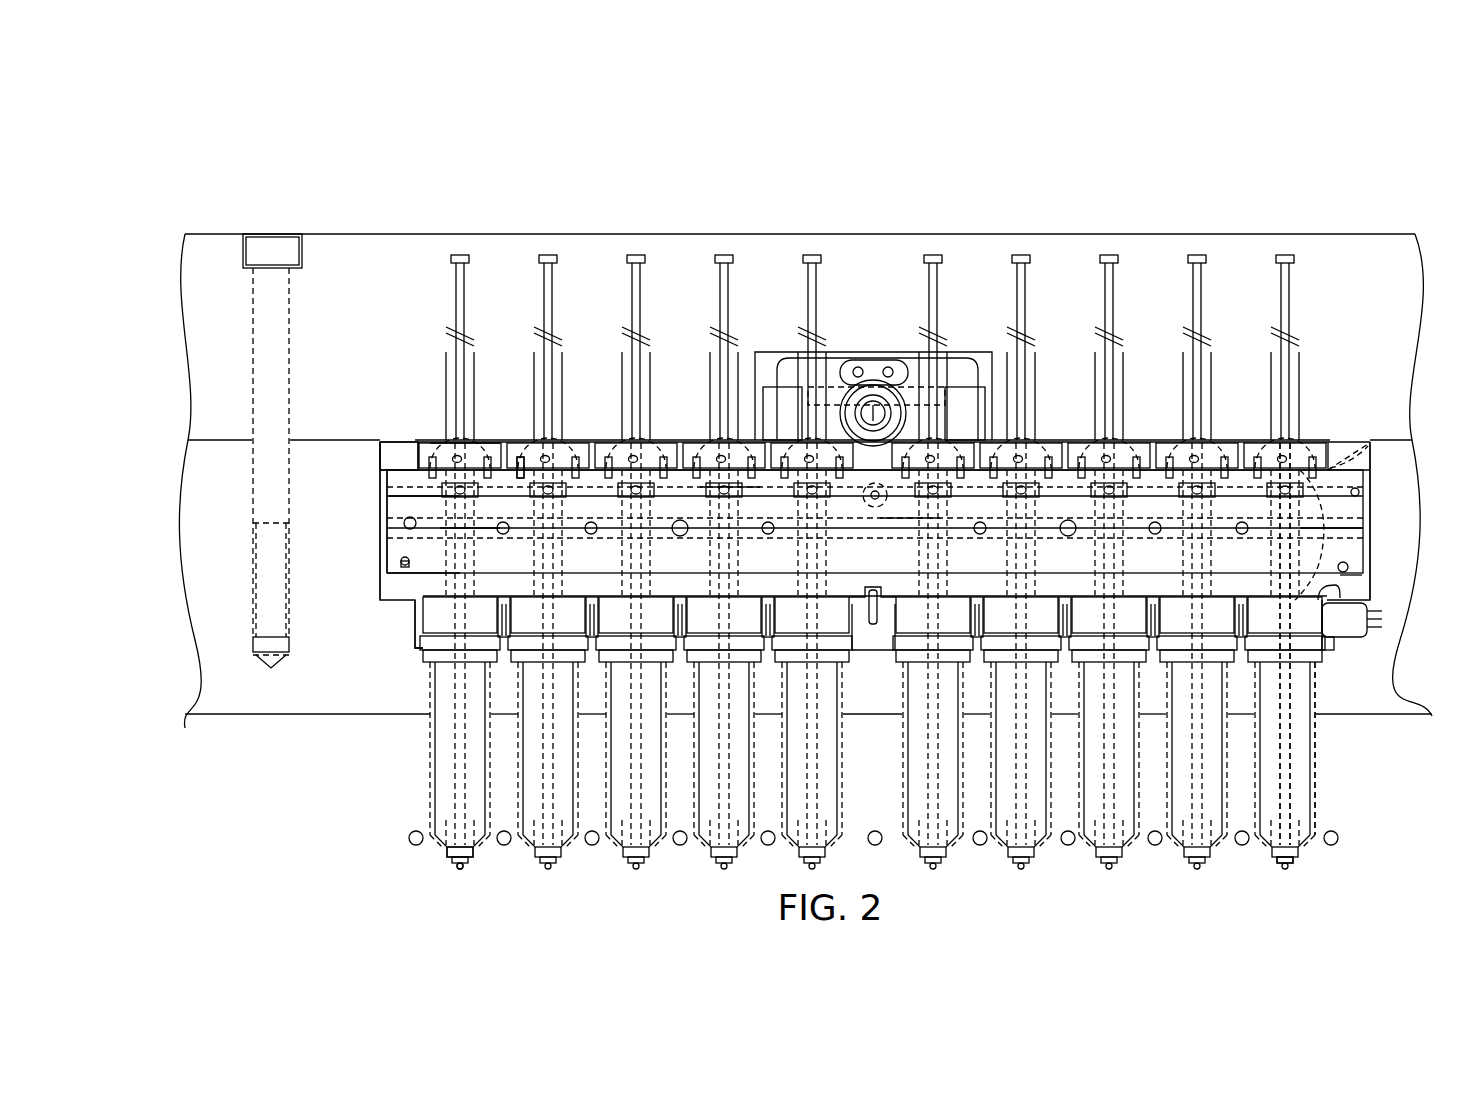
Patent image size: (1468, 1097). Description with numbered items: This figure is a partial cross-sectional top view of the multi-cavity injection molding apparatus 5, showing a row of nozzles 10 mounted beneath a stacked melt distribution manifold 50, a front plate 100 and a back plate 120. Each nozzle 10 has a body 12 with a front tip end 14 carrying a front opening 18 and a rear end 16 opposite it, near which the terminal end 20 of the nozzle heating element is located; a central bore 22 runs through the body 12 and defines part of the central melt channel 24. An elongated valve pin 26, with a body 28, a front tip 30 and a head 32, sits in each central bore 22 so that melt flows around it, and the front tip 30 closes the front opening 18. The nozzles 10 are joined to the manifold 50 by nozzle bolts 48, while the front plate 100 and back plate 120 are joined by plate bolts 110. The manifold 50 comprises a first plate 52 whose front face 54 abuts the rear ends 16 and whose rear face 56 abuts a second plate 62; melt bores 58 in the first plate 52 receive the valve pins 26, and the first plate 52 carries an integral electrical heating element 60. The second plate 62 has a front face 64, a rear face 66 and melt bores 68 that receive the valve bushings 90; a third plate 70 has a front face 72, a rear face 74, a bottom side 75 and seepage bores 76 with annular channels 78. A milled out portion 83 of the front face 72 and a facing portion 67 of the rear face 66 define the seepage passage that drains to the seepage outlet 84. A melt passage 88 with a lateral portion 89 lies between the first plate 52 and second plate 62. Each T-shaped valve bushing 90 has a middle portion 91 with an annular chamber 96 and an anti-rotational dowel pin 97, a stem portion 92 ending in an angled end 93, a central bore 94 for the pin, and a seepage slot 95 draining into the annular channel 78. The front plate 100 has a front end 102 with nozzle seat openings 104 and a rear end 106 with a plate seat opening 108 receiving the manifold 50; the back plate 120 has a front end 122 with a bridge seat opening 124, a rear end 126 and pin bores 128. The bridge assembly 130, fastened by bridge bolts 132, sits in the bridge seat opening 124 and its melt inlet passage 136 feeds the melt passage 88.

The injection molding apparatus 5 is at (1135, 877).
The nozzle 10 is at (446, 753).
The body 12 is at (442, 770).
The front tip end 14 is at (472, 850).
The front opening 18 is at (455, 856).
The rear end 16 is at (440, 615).
The terminal end 20 is at (1358, 622).
The central bore 22 is at (1300, 678).
The central melt channel 24 is at (1293, 779).
The valve pin 26 is at (462, 305).
The body 28 is at (1335, 590).
The front tip 30 is at (1288, 865).
The head 32 is at (1290, 255).
The nozzle bolt 48 is at (408, 467).
The melt distribution manifold 50 is at (1362, 517).
The first plate 52 is at (1385, 618).
The front face 54 is at (1330, 645).
The rear face 56 is at (1348, 568).
The melt bore 58 is at (1310, 530).
The integral electrical heating element 60 is at (1352, 578).
The second plate 62 is at (395, 513).
The front face 64 is at (408, 527).
The rear face 66 is at (407, 495).
The portion 67 is at (480, 528).
The melt bore 68 is at (398, 456).
The third plate 70 is at (1395, 468).
The front face 72 is at (1358, 492).
The rear face 74 is at (1355, 470).
The bottom side 75 is at (1375, 465).
The seepage bore 76 is at (575, 450).
The annular channel 78 is at (650, 493).
The milled out portion 83 is at (990, 495).
The seepage outlet 84 is at (890, 440).
The melt passage 88 is at (1255, 447).
The lateral portion 89 is at (1130, 527).
The valve bushing 90 is at (445, 445).
The middle portion 91 is at (430, 455).
The stem portion 92 is at (1310, 460).
The end 93 is at (817, 530).
The central bore 94 is at (1072, 447).
The seepage slot 95 is at (730, 487).
The annular chamber 96 is at (1290, 460).
The anti-rotational dowel pin 97 is at (520, 460).
The front plate 100 is at (203, 642).
The front end 102 is at (225, 716).
The nozzle seat opening 104 is at (1320, 735).
The rear end 106 is at (800, 466).
The plate seat opening 108 is at (378, 462).
The plate bolt 110 is at (263, 248).
The back plate 120 is at (220, 245).
The front end 122 is at (242, 437).
The bridge seat opening 124 is at (837, 352).
The rear end 126 is at (445, 233).
The pin bore 128 is at (653, 395).
The bridge assembly 130 is at (787, 407).
The bridge bolt 132 is at (975, 360).
The melt inlet passage 136 is at (872, 422).